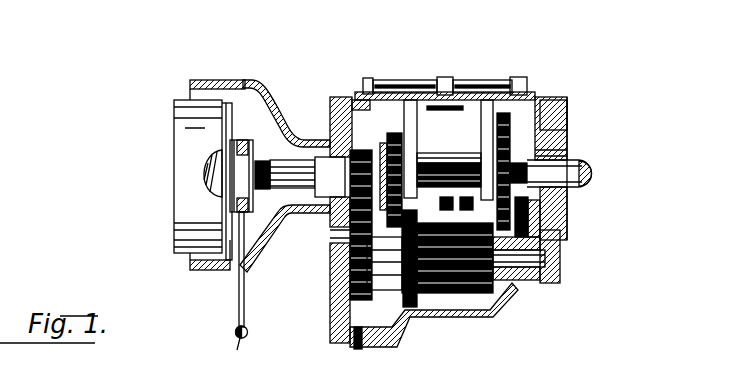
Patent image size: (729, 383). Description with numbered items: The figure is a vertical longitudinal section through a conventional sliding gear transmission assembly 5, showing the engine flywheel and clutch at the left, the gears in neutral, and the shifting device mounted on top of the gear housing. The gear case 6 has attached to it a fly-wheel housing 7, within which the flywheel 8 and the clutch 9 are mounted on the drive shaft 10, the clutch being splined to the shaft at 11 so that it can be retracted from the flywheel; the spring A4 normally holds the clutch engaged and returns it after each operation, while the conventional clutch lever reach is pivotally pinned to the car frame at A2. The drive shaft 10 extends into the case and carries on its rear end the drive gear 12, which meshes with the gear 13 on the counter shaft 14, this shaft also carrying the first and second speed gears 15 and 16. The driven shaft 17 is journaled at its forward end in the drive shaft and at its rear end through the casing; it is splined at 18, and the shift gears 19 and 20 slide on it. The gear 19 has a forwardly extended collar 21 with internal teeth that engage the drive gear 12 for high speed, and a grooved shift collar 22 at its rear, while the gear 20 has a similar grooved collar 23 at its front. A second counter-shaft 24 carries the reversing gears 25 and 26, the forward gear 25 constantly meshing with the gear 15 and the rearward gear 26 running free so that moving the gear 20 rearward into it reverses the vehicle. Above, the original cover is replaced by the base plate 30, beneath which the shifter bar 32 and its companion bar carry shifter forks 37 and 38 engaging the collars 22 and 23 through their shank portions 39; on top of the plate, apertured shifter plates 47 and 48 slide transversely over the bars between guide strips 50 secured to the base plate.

The speed gear transmission assembly 5 is at (441, 294).
The gear case 6 is at (336, 342).
The fly-wheel housing 7 is at (212, 80).
The flywheel 8 is at (174, 236).
The clutch 9 is at (233, 105).
The drive shaft 10 is at (293, 196).
The spline 11 is at (263, 158).
The drive gear 12 is at (328, 103).
The gear 13 is at (340, 300).
The counter shaft 14 is at (337, 250).
The first speed gear 15 is at (483, 298).
The second speed gear 16 is at (410, 297).
The driven shaft 17 is at (588, 173).
The spline 18 is at (467, 198).
The shift gear 19 is at (397, 137).
The shift gear 20 is at (493, 151).
The collar 21 is at (385, 207).
The grooved shift collar 22 is at (420, 145).
The grooved collar 23 is at (480, 145).
The counter-shaft 24 is at (547, 197).
The reversing gear 25 is at (441, 200).
The reversing gear 26 is at (528, 223).
The base plate 30 is at (537, 92).
The shifter bar 32 is at (530, 120).
The shifter fork 37 is at (418, 125).
The shifter fork 38 is at (496, 118).
The shank portion 39 is at (403, 113).
The shifter plate 47 is at (410, 80).
The shifter plate 48 is at (487, 80).
The guide strip 50 is at (370, 78).
The spring A4 is at (205, 180).
The pivot A2 is at (243, 354).